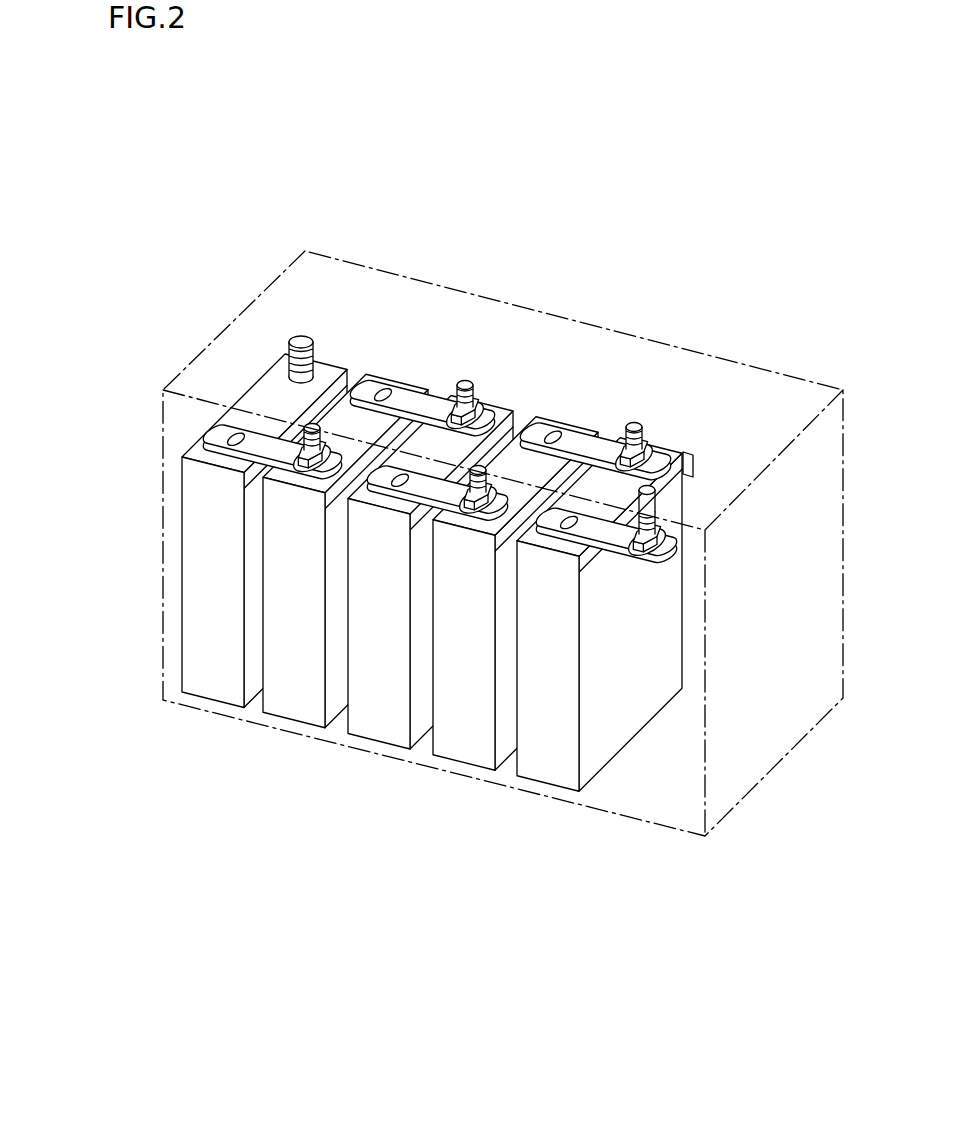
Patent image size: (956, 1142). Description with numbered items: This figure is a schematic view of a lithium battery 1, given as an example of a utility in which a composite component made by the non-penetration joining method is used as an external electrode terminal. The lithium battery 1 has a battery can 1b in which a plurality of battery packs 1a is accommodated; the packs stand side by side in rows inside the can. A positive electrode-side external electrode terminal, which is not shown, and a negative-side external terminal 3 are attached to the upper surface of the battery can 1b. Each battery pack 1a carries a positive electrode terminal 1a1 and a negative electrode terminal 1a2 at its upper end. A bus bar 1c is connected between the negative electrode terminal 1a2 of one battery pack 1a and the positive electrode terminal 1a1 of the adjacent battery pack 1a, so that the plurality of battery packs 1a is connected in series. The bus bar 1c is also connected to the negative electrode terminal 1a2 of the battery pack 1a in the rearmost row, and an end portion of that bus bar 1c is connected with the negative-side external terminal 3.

The lithium battery 1 is at (445, 525).
The battery pack 1a is at (552, 735).
The positive electrode terminal 1a1 is at (300, 350).
The negative electrode terminal 1a2 is at (205, 437).
The battery can 1b is at (320, 305).
The bus bar 1c is at (243, 467).
The negative-side external terminal 3 is at (665, 485).